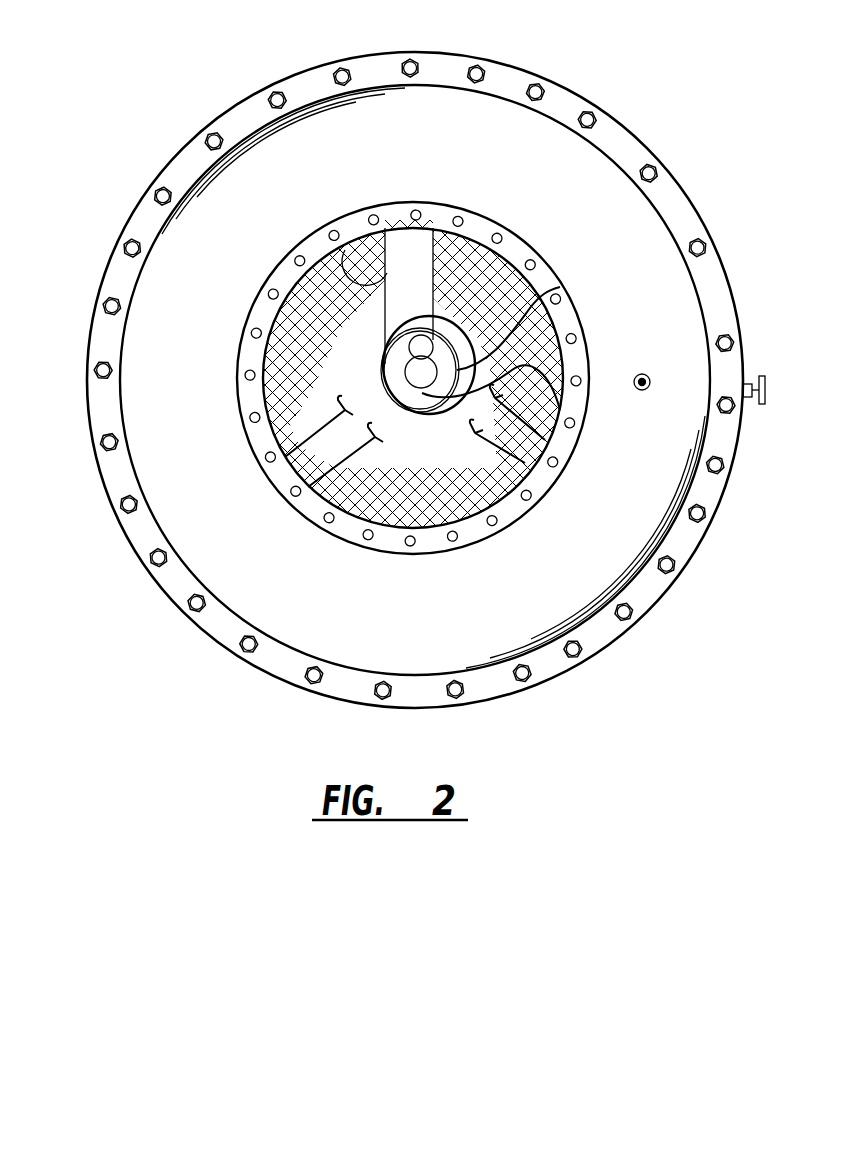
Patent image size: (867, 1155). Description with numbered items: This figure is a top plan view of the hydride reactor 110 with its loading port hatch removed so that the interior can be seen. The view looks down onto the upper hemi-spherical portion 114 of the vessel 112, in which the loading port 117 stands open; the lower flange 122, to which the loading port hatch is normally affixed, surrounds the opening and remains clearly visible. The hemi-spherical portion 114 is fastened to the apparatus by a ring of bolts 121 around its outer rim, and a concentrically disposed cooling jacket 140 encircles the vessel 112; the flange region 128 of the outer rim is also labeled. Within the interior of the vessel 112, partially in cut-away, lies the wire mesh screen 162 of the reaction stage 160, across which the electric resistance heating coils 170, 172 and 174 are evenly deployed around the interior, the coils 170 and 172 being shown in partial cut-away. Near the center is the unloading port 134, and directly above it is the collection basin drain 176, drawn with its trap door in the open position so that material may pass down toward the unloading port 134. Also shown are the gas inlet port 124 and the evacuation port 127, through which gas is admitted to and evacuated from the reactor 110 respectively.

The hydride reactor 110 is at (124, 166).
The vessel 112 is at (605, 147).
The upper hemi-spherical portion 114 is at (500, 112).
The loading port 117 is at (451, 222).
The bolts 121 is at (274, 96).
The lower flange 122 is at (527, 250).
The gas inlet port 124 is at (677, 338).
The evacuation port 127 is at (765, 376).
The flange rim 128 is at (708, 498).
The unloading port 134 is at (560, 410).
The cooling jacket 140 is at (701, 214).
The reaction stage 160 is at (416, 478).
The wire mesh screen 162 is at (525, 463).
The electric resistance heating coil 170 is at (545, 440).
The electric resistance heating coil 172 is at (285, 457).
The electric resistance heating coil 174 is at (345, 250).
The collection basin drain 176 is at (560, 287).